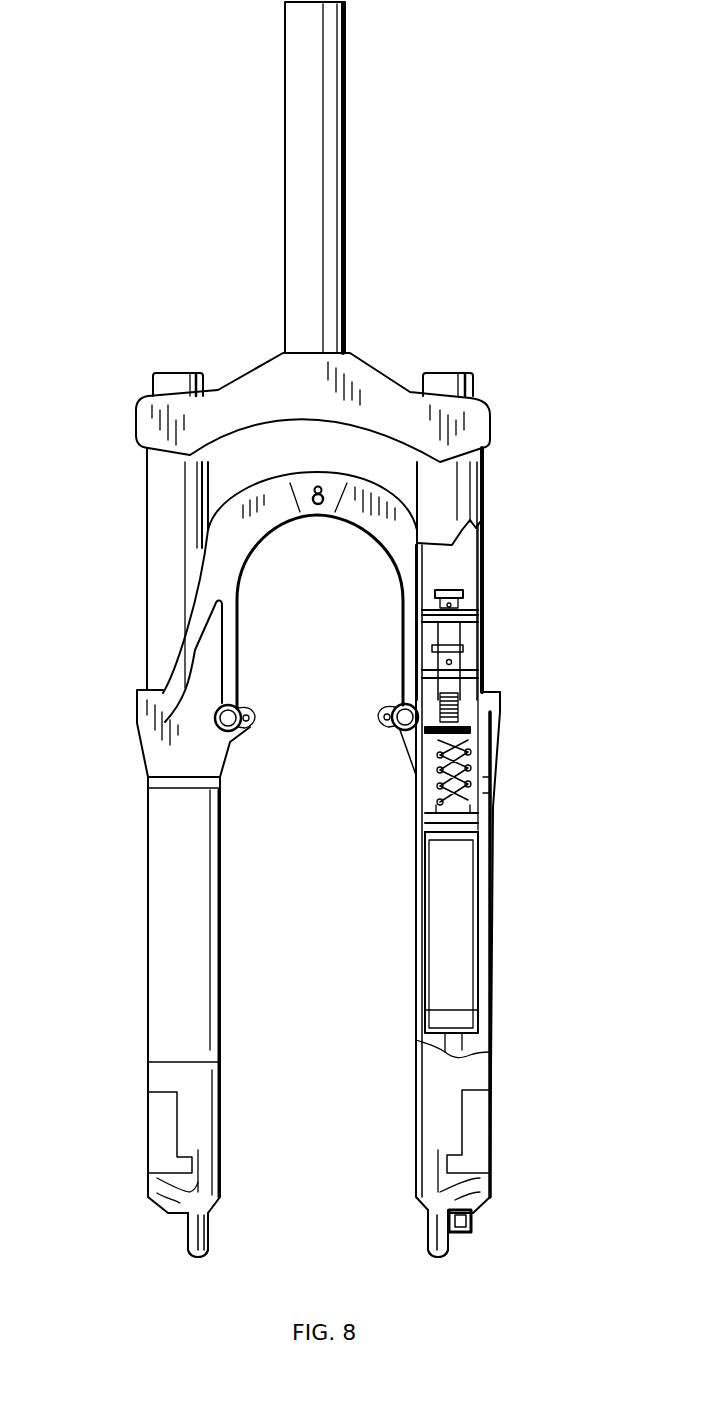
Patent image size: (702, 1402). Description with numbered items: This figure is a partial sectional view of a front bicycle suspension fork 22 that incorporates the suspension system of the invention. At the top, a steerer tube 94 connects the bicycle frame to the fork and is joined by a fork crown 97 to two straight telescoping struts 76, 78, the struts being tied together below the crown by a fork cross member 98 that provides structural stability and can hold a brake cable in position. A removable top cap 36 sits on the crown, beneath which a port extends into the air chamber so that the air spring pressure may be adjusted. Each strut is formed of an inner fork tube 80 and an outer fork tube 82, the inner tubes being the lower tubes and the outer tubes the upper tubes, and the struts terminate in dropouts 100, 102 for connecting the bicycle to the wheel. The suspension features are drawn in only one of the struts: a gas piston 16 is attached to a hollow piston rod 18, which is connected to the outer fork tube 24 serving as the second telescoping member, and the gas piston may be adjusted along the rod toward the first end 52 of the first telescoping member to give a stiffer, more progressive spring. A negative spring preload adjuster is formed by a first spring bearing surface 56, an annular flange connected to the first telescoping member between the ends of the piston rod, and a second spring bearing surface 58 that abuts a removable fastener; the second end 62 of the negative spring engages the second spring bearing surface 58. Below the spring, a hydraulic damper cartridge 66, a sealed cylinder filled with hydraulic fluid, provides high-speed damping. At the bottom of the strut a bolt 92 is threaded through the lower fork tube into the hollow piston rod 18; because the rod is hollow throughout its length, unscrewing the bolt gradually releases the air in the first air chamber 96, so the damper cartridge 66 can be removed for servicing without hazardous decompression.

The steerer tube 94 is at (285, 100).
The fork crown 97 is at (377, 364).
The removable top cap 36 is at (462, 374).
The bicycle suspension fork 22 is at (462, 307).
The inner fork tube 80 is at (147, 495).
The first end of first telescoping member 52 is at (483, 476).
The first air chamber 96 is at (483, 550).
The fork cross member 98 is at (320, 470).
The telescoping strut 76 is at (118, 722).
The outer fork tube 82 is at (147, 826).
The dropout 102 is at (188, 1246).
The outer fork tube 24 is at (494, 893).
The telescoping strut 78 is at (530, 684).
The gas piston 16 is at (480, 603).
The piston rod 18 is at (464, 640).
The second spring bearing surface 58 is at (477, 727).
The second end of spring 62 is at (477, 740).
The first spring bearing surface 56 is at (480, 812).
The hydraulic damper cartridge 66 is at (475, 975).
The dropout 100 is at (428, 1242).
The bolt 92 is at (473, 1222).